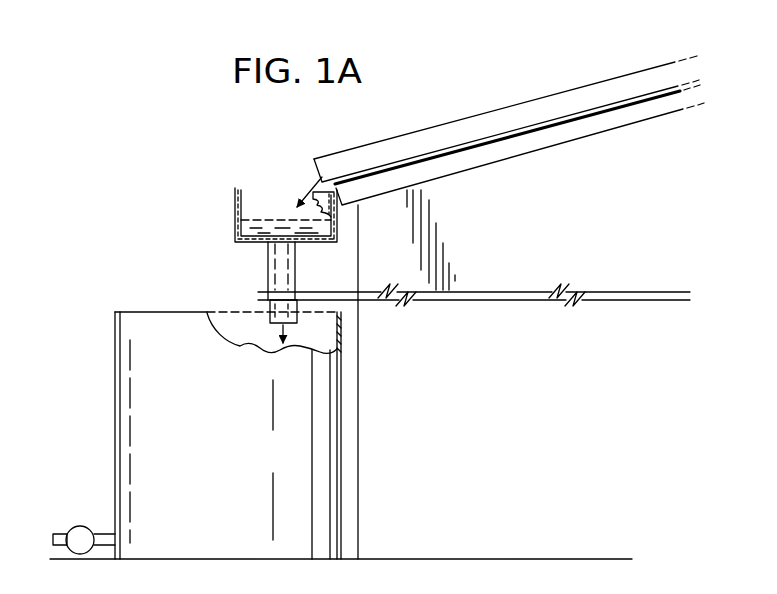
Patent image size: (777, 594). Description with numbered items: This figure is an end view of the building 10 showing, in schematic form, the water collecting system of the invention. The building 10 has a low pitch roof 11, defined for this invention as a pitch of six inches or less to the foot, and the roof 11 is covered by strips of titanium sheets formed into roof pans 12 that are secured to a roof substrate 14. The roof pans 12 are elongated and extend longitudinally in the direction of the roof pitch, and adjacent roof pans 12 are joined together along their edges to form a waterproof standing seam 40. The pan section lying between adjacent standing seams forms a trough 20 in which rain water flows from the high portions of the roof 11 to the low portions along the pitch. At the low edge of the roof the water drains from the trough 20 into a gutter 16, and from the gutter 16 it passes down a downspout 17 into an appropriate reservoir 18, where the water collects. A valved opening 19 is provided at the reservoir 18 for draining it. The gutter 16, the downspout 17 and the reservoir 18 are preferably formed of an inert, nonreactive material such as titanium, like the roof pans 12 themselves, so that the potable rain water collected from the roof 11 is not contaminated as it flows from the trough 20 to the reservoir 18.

The building 10 is at (624, 146).
The low pitch roof 11 is at (484, 109).
The roof pans 12 is at (450, 145).
The roof substrate 14 is at (518, 145).
The gutter 16 is at (237, 217).
The downspout 17 is at (278, 267).
The reservoir 18 is at (122, 343).
The valved opening 19 is at (73, 525).
The trough 20 is at (352, 166).
The standing seam 40 is at (563, 91).